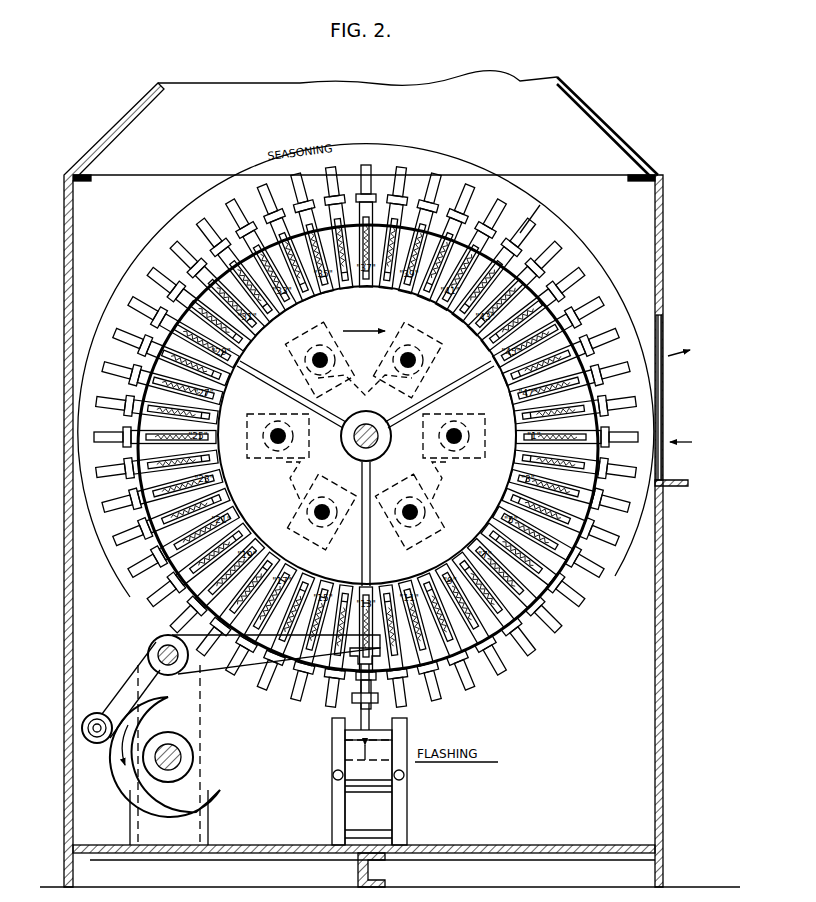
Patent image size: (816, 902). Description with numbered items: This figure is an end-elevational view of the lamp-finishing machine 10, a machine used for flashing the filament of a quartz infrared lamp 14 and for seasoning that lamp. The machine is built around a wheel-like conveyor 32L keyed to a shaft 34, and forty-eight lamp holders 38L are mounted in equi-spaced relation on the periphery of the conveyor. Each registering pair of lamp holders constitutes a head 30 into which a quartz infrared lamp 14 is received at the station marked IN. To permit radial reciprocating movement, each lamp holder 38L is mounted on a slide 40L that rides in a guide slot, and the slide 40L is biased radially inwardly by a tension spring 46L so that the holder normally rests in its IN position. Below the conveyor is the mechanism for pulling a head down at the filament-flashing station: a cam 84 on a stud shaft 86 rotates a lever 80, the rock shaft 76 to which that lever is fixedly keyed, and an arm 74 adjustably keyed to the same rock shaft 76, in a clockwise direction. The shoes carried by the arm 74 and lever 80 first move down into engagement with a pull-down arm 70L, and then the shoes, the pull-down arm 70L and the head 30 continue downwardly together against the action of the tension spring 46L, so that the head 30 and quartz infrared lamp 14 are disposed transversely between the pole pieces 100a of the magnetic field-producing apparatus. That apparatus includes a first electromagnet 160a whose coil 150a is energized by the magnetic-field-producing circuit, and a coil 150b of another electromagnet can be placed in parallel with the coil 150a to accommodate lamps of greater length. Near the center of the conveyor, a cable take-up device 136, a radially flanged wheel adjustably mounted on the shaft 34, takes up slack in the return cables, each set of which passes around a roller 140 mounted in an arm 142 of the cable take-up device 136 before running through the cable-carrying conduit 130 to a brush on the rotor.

The lamp-finishing machine 10 is at (608, 127).
The quartz infrared lamp 14 is at (398, 730).
The head 30 is at (540, 655).
The wheel-like conveyor 32L is at (540, 278).
The shaft 34 is at (365, 424).
The lamp holder 38L is at (605, 437).
The slide 40L is at (590, 406).
The tension spring 46L is at (430, 404).
The pull-down arm 70L is at (595, 548).
The arm 74 is at (232, 668).
The rock shaft 76 is at (150, 650).
The lever 80 is at (122, 696).
The cam 84 is at (198, 795).
The stud shaft 86 is at (185, 757).
The pole piece 100a is at (350, 753).
The cable-carrying conduit 130 is at (322, 510).
The cable take-up device 136 is at (365, 363).
The roller 140 is at (265, 425).
The arm 142 is at (284, 462).
The coil 150a is at (352, 790).
The coil 150b is at (355, 815).
The first electromagnet 160a is at (410, 806).